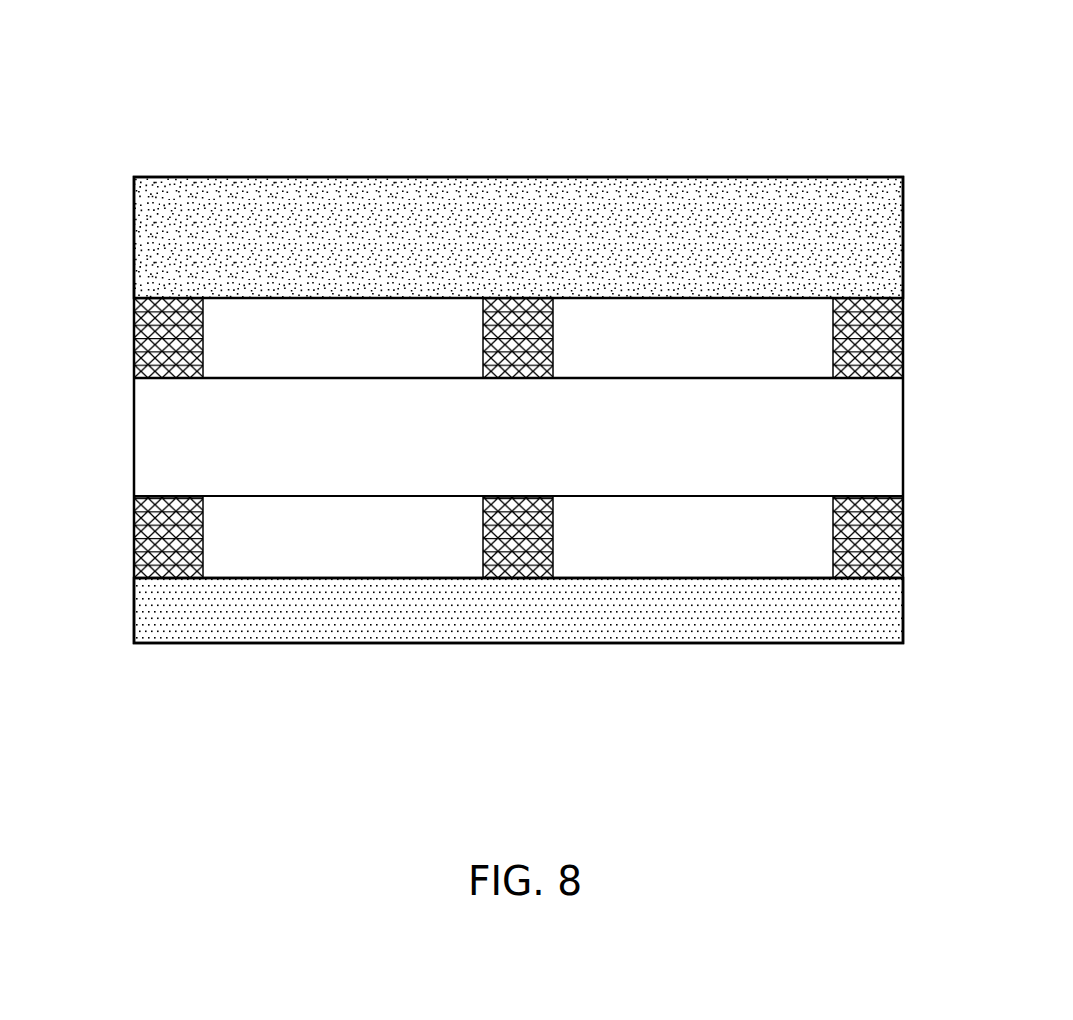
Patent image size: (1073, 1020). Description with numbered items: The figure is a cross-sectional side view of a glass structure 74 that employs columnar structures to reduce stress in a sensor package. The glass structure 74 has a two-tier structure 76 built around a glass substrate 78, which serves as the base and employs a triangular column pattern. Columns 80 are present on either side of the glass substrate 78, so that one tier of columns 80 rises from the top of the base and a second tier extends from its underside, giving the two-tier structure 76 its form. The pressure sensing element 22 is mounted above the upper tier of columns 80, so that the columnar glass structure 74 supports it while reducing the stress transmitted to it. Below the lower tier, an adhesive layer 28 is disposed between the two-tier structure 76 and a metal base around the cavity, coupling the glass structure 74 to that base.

The glass structure 74 is at (943, 82).
The pressure sensing element 22 is at (889, 242).
The columns 80 is at (903, 333).
The two-tier structure 76 is at (118, 298).
The glass substrate 78 is at (532, 453).
The adhesive layer 28 is at (893, 607).